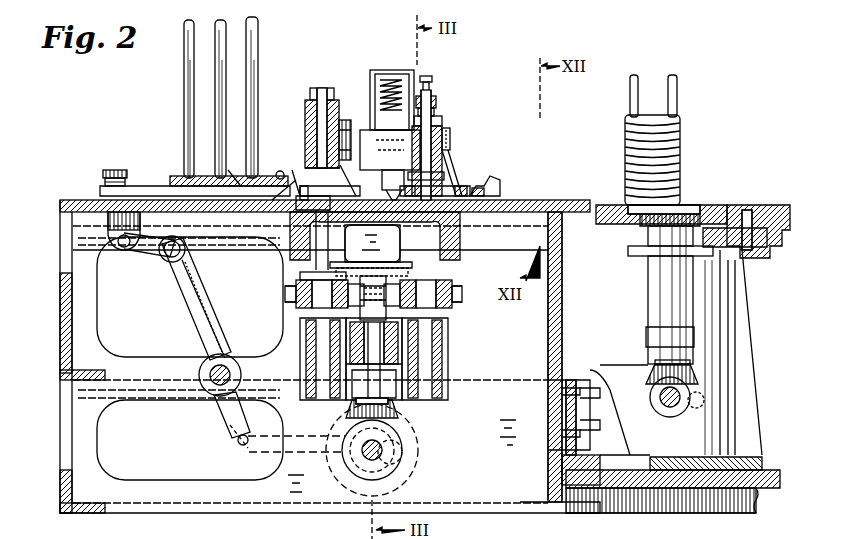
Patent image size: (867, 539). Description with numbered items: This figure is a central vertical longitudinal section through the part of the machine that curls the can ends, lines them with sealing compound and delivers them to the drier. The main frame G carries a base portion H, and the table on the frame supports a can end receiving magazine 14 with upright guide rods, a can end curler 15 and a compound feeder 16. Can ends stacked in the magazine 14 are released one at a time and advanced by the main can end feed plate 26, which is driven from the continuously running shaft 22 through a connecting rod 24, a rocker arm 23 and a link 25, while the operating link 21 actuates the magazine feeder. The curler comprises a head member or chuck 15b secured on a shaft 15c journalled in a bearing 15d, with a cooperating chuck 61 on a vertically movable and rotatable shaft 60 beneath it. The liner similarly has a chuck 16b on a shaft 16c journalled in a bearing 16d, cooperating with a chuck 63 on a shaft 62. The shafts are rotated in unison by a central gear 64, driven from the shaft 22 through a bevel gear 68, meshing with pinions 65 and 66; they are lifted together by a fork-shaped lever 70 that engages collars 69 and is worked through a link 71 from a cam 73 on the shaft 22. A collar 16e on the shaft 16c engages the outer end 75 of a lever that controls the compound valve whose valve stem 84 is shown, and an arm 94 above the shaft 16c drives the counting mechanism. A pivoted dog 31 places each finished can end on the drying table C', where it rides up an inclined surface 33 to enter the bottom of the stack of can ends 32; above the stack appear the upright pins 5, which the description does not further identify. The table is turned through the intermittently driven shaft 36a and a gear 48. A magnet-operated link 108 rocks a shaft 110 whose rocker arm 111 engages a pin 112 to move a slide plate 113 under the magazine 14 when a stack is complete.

The main frame G is at (54, 320).
The main can end feed plate 26 is at (95, 203).
The can end receiving magazine 14 is at (184, 82).
The operating link 21 is at (144, 178).
The shaft 110 is at (280, 174).
The slide plate 113 is at (228, 170).
The rocker arm 111 is at (300, 210).
The pin 112 is at (305, 222).
The rocker arm 23 is at (184, 334).
The link 25 is at (160, 258).
The connecting rod 24 is at (262, 452).
The can end curler 15 is at (302, 122).
The shaft 15c is at (308, 105).
The bearing 15d is at (338, 100).
The head member or chuck 15b is at (292, 170).
The valve stem 84 is at (398, 70).
The arm 94 is at (432, 98).
The shaft 16c is at (440, 125).
The compound feeder 16 is at (446, 140).
The bearing 16d is at (440, 142).
The outer end of lever 75 is at (436, 176).
The collar 16e is at (450, 184).
The chuck 16b is at (456, 192).
The pivoted dog 31 is at (494, 190).
The cooperating chuck 63 is at (444, 232).
The shaft 62 is at (410, 264).
The cooperating chuck 61 is at (316, 262).
The shaft 60 is at (310, 276).
The fork-shaped lever 70 is at (300, 292).
The collar 69 is at (300, 306).
The pinion 65 is at (306, 326).
The pinion 66 is at (438, 336).
The gear 64 is at (392, 340).
The link 71 is at (362, 306).
The bevel gear 68 is at (392, 412).
The shaft 22 is at (402, 450).
The cam 73 is at (392, 466).
The inclined surface 33 is at (628, 204).
The drying table C' is at (746, 216).
The spindle pins 5 is at (676, 97).
The can ends in stacked formation 32 is at (678, 140).
The link 108 is at (648, 342).
The gear 48 is at (648, 370).
The intermittently driven shaft 36a is at (680, 396).
The base portion H is at (770, 494).